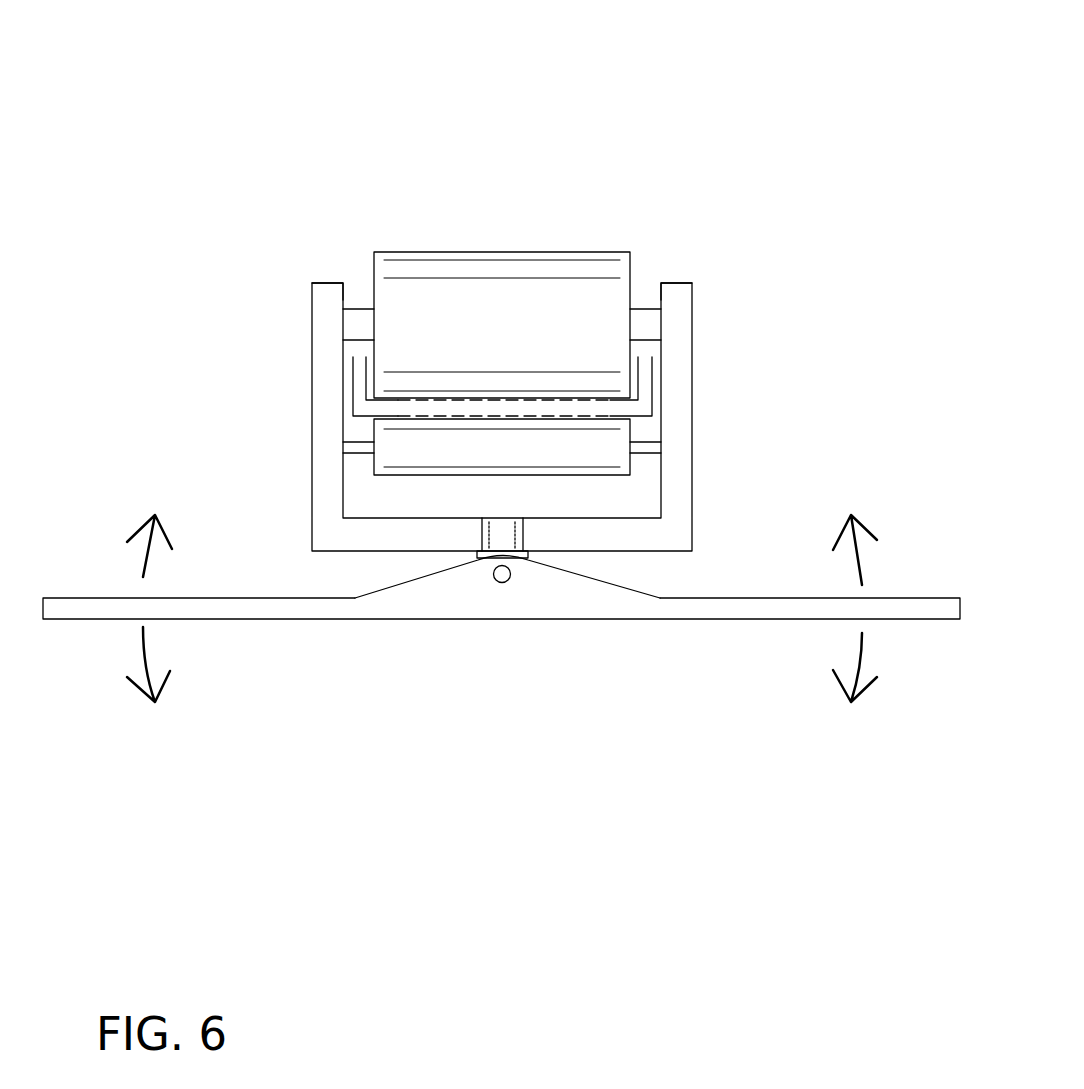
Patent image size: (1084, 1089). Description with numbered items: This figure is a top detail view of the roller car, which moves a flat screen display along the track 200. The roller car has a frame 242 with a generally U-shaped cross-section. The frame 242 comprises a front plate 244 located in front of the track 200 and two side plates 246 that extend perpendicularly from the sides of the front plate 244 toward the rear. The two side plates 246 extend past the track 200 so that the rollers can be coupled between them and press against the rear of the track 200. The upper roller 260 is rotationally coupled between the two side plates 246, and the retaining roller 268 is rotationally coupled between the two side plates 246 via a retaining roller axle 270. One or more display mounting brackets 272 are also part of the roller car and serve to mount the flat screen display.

The track 200 is at (642, 372).
The frame 242 is at (313, 417).
The front plate 244 is at (387, 543).
The side plates 246 is at (677, 300).
The upper roller 260 is at (498, 267).
The retaining roller 268 is at (572, 453).
The retaining roller axle 270 is at (648, 448).
The display mounting bracket 272 is at (910, 608).